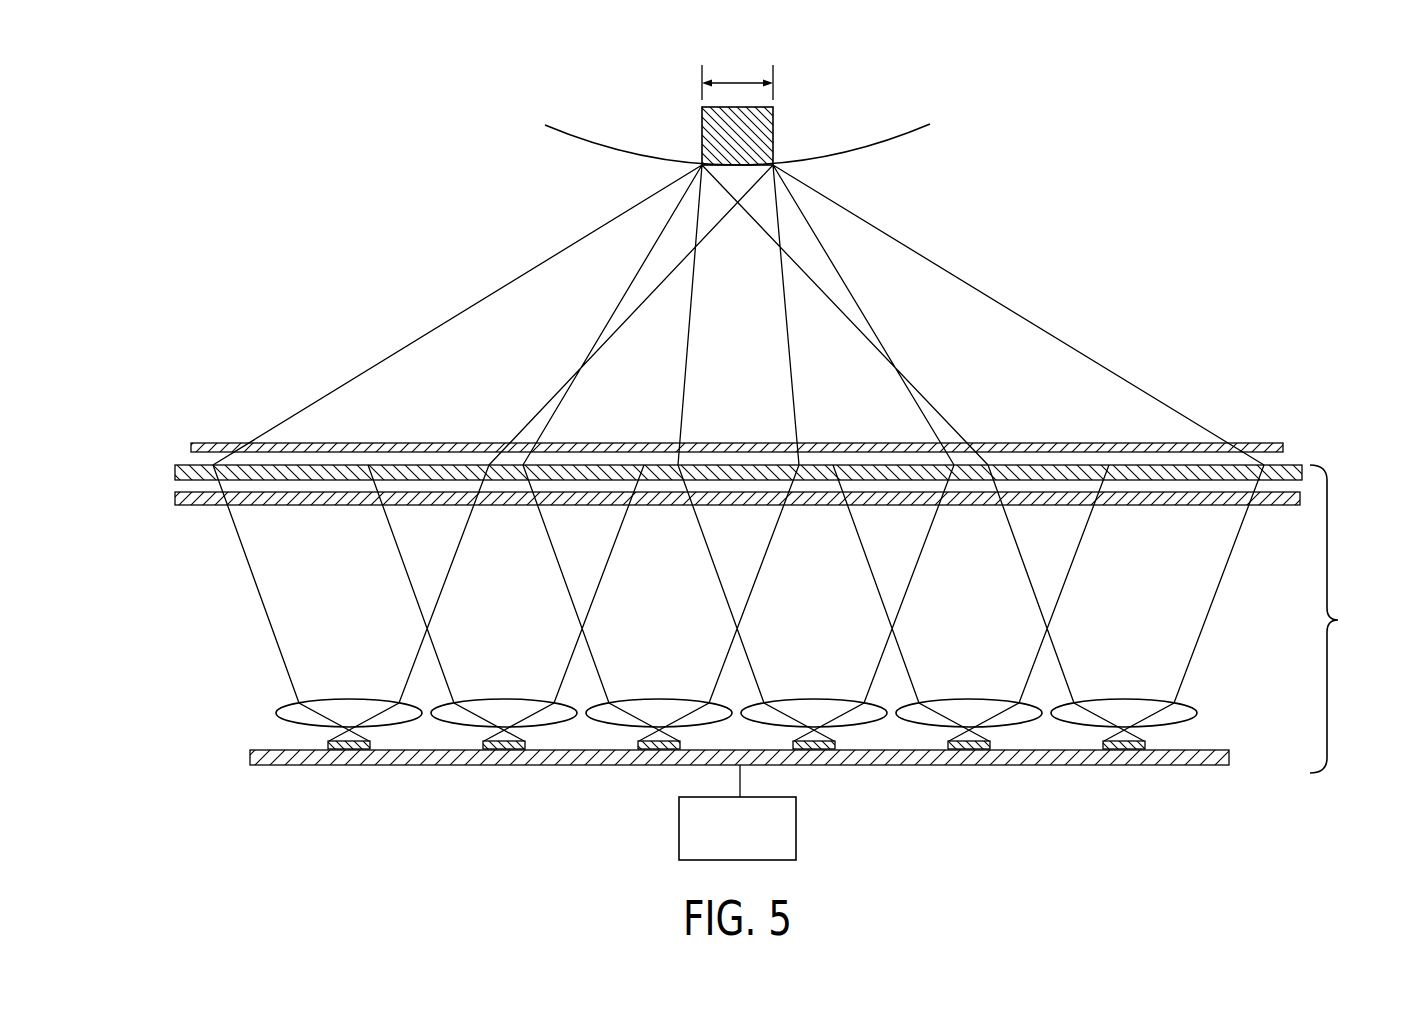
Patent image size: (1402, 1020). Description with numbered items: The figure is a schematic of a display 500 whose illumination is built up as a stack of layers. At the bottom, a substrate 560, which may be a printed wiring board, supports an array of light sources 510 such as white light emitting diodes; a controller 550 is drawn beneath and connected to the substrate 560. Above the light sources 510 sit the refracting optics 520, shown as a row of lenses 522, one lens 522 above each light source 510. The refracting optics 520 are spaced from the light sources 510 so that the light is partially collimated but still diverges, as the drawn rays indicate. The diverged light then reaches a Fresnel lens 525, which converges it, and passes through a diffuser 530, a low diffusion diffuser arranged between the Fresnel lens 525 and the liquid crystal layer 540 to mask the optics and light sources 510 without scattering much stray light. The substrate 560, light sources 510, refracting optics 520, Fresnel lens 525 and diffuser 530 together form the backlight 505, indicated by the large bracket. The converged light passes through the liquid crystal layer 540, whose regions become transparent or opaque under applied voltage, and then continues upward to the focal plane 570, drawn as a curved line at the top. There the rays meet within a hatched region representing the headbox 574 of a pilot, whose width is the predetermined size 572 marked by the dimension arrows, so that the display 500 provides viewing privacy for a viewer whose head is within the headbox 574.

The display 500 is at (482, 186).
The backlight 505 is at (734, 615).
The light sources 510 is at (327, 745).
The refracting optics 520 is at (1230, 692).
The lenses 522 is at (292, 703).
The Fresnel lens 525 is at (197, 505).
The diffuser 530 is at (175, 467).
The liquid crystal layer 540 is at (200, 443).
The controller 550 is at (679, 829).
The substrate 560 is at (250, 757).
The focal plane 570 is at (868, 146).
The predetermined size 572 is at (738, 80).
The headbox 574 is at (702, 117).